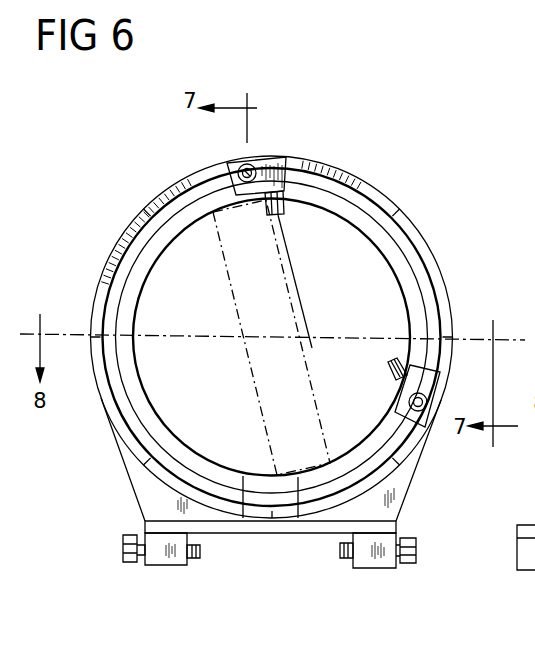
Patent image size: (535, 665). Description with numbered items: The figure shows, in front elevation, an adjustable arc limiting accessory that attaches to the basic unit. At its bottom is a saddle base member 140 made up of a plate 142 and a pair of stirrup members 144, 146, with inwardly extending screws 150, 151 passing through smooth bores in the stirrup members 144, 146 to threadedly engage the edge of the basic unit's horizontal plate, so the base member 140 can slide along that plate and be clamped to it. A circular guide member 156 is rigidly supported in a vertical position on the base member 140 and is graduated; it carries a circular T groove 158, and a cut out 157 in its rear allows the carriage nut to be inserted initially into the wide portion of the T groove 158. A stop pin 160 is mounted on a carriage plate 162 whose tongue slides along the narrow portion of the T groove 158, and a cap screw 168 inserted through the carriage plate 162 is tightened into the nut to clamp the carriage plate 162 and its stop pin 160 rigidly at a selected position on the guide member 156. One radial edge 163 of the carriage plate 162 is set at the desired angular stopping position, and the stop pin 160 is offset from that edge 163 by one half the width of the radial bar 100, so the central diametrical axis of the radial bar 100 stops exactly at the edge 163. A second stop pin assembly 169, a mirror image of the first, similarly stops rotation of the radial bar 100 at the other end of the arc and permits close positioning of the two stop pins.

The radial bar 100 is at (237, 322).
The saddle base member 140 is at (259, 538).
The plate 142 is at (230, 527).
The stirrup member 144 is at (160, 552).
The stirrup member 146 is at (363, 553).
The screw 150 is at (128, 560).
The screw 151 is at (413, 548).
The circular guide member 156 is at (433, 260).
The cut out 157 is at (244, 498).
The circular T groove 158 is at (368, 197).
The stop pin 160 is at (285, 207).
The carriage plate 162 is at (276, 168).
The radial edge 163 is at (232, 177).
The cap screw 168 is at (237, 168).
The second stop pin assembly 169 is at (390, 377).